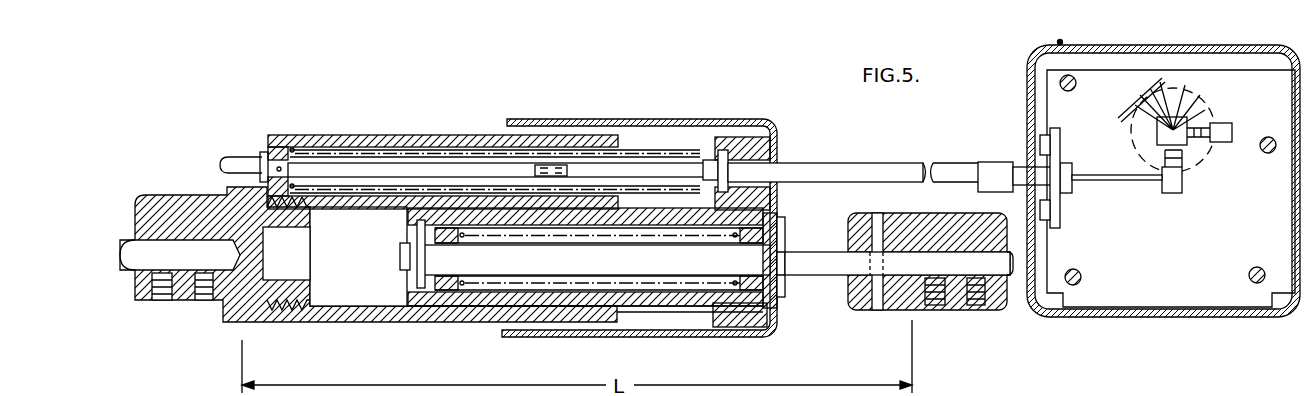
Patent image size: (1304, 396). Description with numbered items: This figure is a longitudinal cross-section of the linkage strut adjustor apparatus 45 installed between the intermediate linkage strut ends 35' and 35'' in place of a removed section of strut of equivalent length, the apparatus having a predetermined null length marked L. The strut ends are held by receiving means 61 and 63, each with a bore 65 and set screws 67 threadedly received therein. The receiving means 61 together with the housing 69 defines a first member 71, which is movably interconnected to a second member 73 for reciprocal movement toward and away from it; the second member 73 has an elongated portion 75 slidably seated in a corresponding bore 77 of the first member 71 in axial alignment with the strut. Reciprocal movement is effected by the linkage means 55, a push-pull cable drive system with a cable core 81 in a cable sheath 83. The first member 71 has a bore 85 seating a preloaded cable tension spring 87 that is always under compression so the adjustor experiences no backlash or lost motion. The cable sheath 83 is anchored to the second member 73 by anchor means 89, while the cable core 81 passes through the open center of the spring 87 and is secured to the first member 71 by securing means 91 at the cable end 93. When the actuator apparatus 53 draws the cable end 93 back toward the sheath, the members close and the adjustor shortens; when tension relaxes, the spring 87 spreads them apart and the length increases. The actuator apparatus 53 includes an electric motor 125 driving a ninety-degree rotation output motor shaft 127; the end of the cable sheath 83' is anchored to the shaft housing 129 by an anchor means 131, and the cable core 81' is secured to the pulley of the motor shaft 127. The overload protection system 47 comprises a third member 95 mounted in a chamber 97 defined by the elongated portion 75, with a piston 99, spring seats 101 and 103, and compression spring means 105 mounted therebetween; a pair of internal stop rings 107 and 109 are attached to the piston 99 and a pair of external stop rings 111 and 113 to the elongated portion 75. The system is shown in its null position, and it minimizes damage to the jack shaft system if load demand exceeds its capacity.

The intermediate linkage strut end 35' is at (134, 291).
The intermediate linkage strut end 35'' is at (1019, 298).
The linkage strut adjustor apparatus 45 is at (338, 124).
The overload protection system 47 is at (683, 261).
The actuator apparatus 53 is at (1220, 285).
The linkage means 55 is at (870, 163).
The receiving means 61 is at (195, 195).
The receiving means 63 is at (905, 310).
The bore 65 is at (152, 240).
The set screws 67 is at (205, 292).
The housing 69 is at (288, 138).
The first member 71 is at (320, 322).
The second member 73 is at (757, 120).
The elongated portion 75 is at (452, 306).
The bore 77 is at (378, 290).
The cable core 81 is at (503, 122).
The cable core 81' is at (1117, 199).
The cable sheath 83 is at (698, 134).
The cable sheath end 83' is at (1009, 164).
The bore 85 is at (385, 140).
The cable tension spring 87 is at (655, 150).
The anchor means 89 is at (722, 150).
The securing means 91 is at (262, 150).
The cable end 93 is at (238, 160).
The third member 95 is at (600, 290).
The chamber 97 is at (540, 306).
The piston 99 is at (826, 275).
The spring seat 101 is at (795, 210).
The spring seat 103 is at (445, 235).
The compression spring means 105 is at (660, 312).
The internal stop ring 107 is at (783, 284).
The internal stop ring 109 is at (428, 258).
The external stop ring 111 is at (772, 262).
The external stop ring 113 is at (414, 228).
The electric motor 125 is at (1058, 42).
The output motor shaft 127 is at (1190, 142).
The shaft housing 129 is at (1030, 95).
The anchor means 131 is at (1048, 150).